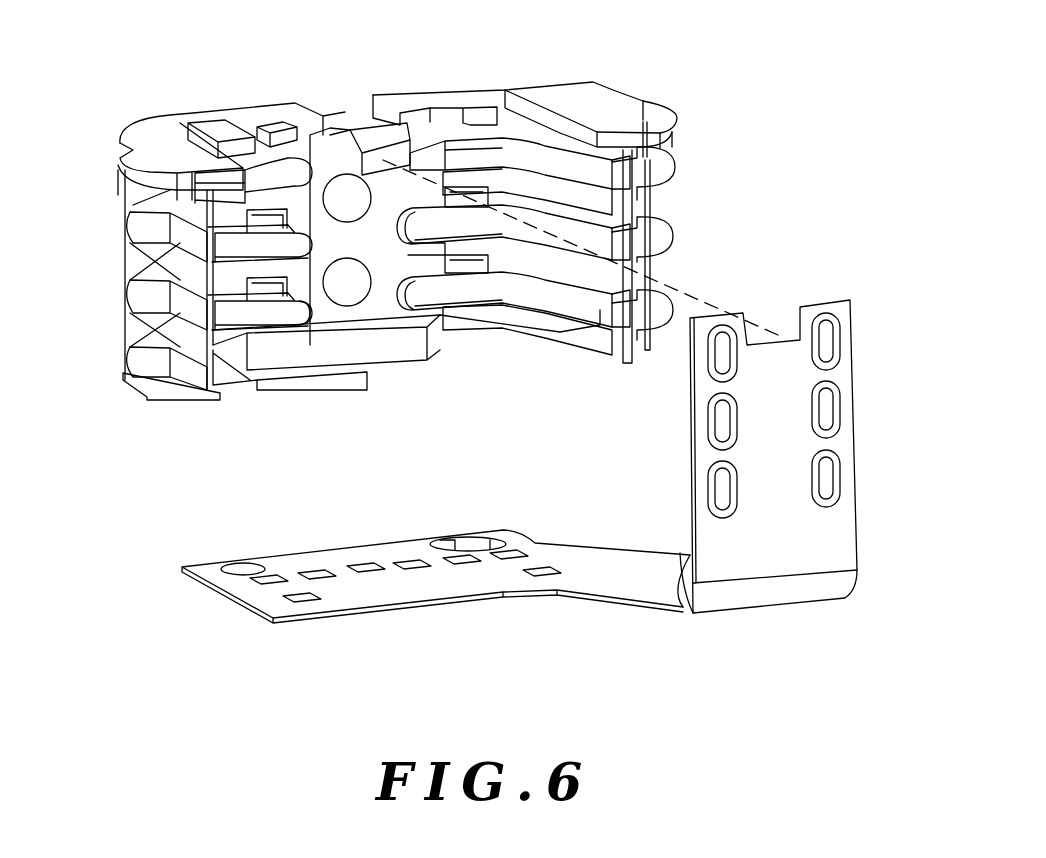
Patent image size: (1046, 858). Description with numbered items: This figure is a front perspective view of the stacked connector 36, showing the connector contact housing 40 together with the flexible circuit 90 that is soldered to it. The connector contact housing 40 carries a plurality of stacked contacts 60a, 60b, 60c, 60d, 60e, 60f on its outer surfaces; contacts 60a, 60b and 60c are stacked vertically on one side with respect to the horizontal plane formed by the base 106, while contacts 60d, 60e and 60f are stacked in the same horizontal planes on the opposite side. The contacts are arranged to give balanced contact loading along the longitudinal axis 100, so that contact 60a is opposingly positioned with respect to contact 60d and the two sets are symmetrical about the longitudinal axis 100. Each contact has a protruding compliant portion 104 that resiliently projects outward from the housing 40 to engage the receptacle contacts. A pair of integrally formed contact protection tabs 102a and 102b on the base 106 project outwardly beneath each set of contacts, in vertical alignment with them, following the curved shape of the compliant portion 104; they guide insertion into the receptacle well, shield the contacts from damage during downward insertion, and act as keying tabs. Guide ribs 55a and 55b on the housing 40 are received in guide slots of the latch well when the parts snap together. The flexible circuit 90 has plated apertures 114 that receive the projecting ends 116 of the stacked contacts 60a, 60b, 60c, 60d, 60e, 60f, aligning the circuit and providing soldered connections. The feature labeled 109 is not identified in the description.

The stacked connector 36 is at (407, 72).
The connector contact housing 40 is at (236, 118).
The guide rib 55a is at (226, 145).
The guide rib 55b is at (513, 130).
The stacked contact 60a is at (135, 230).
The stacked contact 60b is at (135, 296).
The stacked contact 60c is at (135, 362).
The stacked contact 60d is at (662, 172).
The stacked contact 60e is at (665, 240).
The stacked contact 60f is at (660, 320).
The flexible circuit 90 is at (858, 527).
The longitudinal axis 100 is at (697, 300).
The contact protection tab 102a is at (135, 180).
The contact protection tab 102b is at (655, 110).
The protruding compliant portion 104 is at (135, 215).
The base 106 is at (556, 95).
The key rib 109 is at (367, 135).
The apertures 114 is at (830, 408).
The projecting ends 116 is at (300, 310).